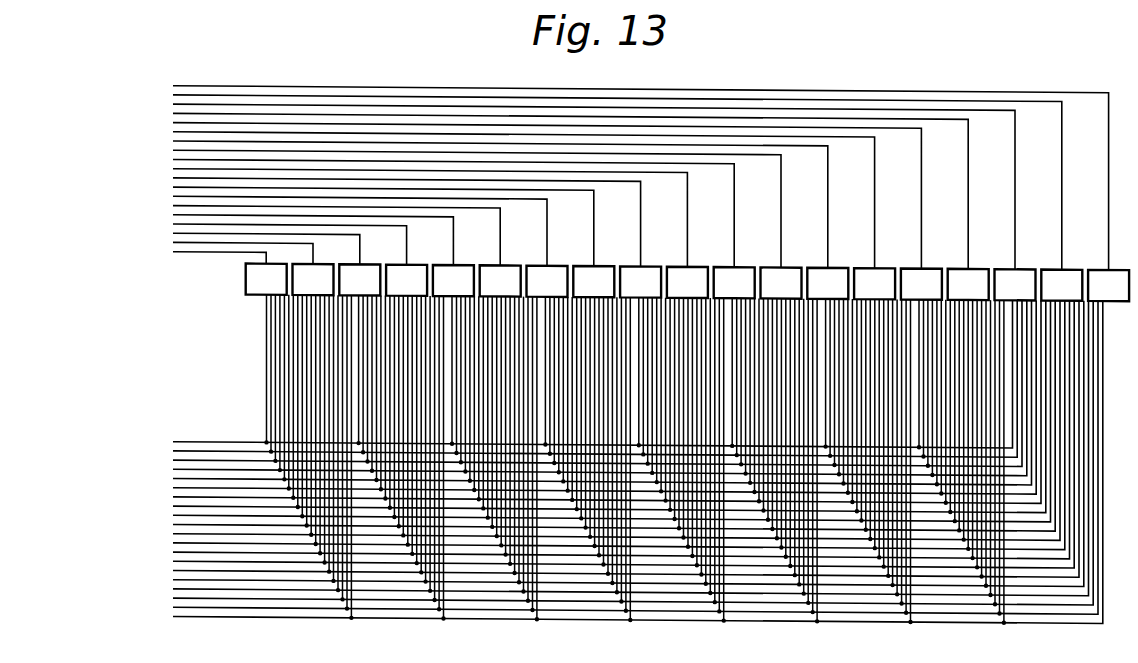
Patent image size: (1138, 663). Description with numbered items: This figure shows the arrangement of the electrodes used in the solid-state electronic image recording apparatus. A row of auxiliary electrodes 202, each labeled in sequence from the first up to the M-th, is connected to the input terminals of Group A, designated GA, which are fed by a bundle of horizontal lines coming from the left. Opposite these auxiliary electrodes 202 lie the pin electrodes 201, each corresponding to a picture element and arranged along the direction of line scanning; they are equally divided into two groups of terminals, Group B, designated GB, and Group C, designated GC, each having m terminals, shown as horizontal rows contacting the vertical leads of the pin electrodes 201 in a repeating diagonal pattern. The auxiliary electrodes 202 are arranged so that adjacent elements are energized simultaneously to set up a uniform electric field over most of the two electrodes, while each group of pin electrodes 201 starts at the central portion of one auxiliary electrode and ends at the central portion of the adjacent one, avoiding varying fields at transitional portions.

The pin electrodes 201 is at (266, 350).
The auxiliary electrodes 202 is at (246, 281).
The Group A input terminals GA is at (140, 81).
The Group B terminals GB is at (135, 437).
The Group C terminals GC is at (135, 537).